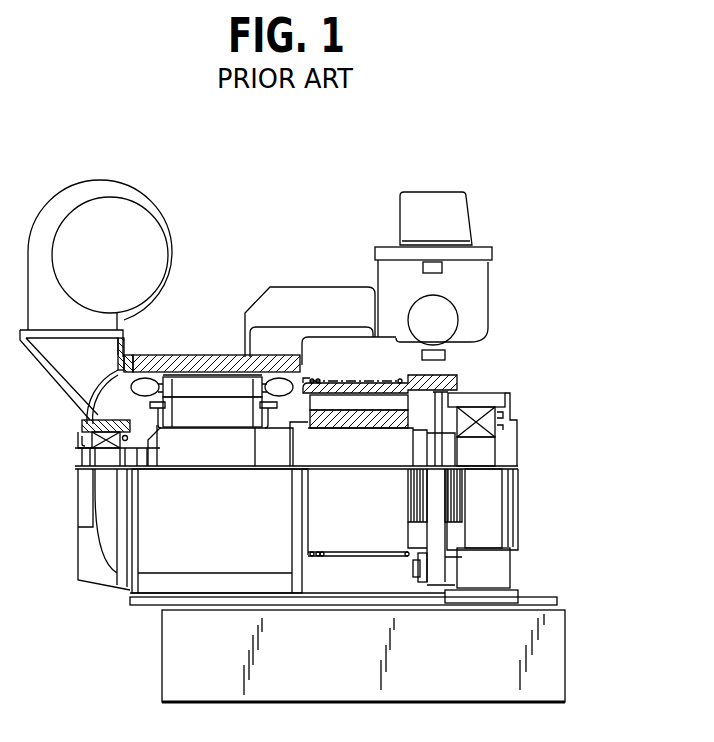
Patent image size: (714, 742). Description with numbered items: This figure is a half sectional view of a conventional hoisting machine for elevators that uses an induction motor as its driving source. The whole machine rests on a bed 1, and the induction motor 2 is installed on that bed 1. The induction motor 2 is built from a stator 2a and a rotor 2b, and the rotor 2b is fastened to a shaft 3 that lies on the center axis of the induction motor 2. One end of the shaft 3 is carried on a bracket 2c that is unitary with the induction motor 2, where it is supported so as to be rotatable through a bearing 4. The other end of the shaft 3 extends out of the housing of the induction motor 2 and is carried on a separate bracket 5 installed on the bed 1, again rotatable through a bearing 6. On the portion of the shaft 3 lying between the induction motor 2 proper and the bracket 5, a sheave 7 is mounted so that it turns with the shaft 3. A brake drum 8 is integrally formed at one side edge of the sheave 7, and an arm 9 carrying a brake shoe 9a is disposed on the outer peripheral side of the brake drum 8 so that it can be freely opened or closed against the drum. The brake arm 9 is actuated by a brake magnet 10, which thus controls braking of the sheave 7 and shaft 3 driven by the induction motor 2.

The bed 1 is at (173, 668).
The induction motor 2 is at (213, 350).
The stator 2a is at (188, 387).
The rotor 2b is at (232, 412).
The bracket 2c is at (107, 550).
The shaft 3 is at (182, 450).
The bearing 4 is at (97, 440).
The bracket 5 is at (488, 508).
The bearing 6 is at (480, 410).
The sheave 7 is at (332, 380).
The brake drum 8 is at (447, 373).
The arm 9 is at (420, 584).
The brake shoe 9a is at (418, 505).
The brake magnet 10 is at (450, 215).